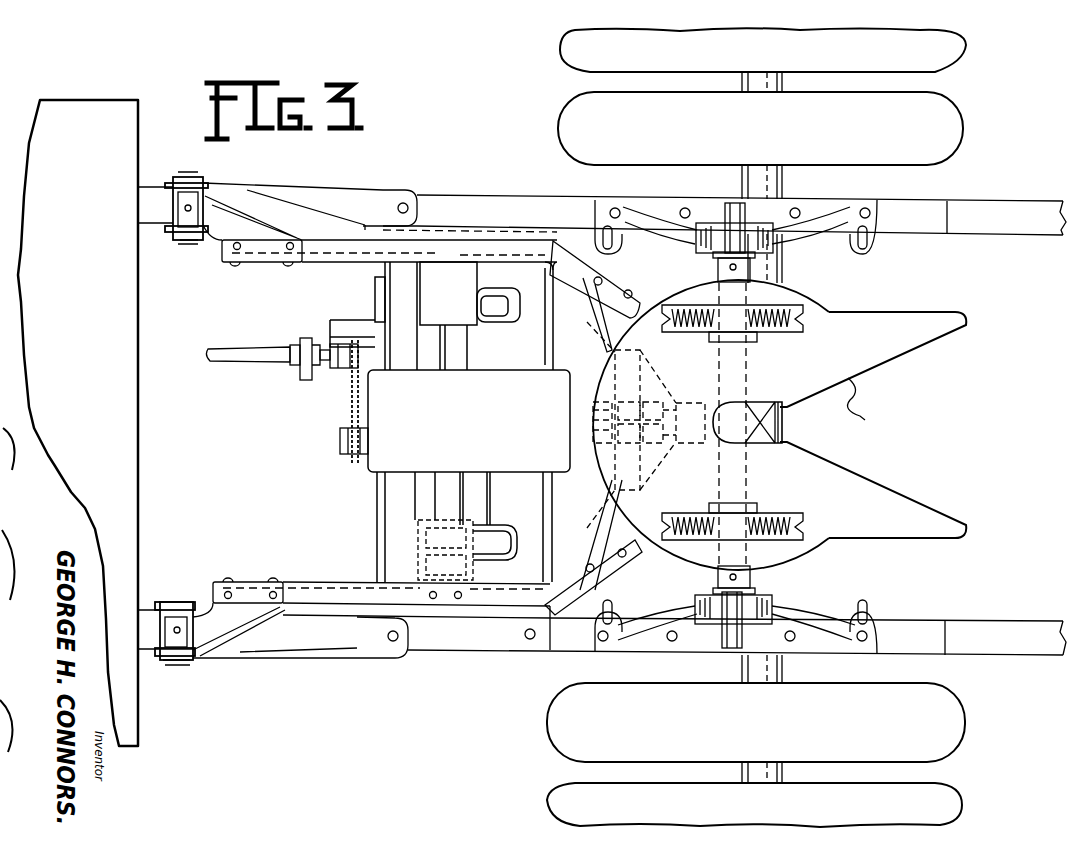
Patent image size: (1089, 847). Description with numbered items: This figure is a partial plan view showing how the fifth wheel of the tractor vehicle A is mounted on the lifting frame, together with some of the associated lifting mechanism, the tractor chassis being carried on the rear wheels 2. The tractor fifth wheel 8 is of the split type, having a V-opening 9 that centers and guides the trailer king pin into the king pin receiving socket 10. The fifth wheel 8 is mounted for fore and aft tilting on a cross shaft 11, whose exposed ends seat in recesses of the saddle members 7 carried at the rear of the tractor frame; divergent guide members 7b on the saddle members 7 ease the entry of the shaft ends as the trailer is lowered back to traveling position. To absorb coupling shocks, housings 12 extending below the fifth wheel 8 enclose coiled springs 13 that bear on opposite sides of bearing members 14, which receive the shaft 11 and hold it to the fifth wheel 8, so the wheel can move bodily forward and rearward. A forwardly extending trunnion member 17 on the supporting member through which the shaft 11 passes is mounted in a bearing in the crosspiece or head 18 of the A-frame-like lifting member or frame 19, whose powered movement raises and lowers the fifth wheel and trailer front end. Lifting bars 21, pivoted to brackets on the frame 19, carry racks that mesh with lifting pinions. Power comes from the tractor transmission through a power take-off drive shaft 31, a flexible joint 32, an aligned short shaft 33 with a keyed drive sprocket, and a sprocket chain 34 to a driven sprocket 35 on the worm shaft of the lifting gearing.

The rear wheels 2 is at (958, 50).
The tractor vehicle A is at (467, 196).
The saddle members 7 is at (830, 216).
The divergent guide members 7b is at (706, 245).
The tractor fifth wheel 8 is at (792, 552).
The V-opening 9 is at (845, 466).
The king pin receiving socket 10 is at (740, 405).
The cross shaft 11 is at (733, 205).
The housings 12 is at (800, 328).
The coiled springs 13 is at (770, 336).
The bearing members 14 is at (750, 302).
The trunnion member 17 is at (692, 405).
The crosspiece or head 18 is at (600, 522).
The lifting member or frame 19 is at (348, 257).
The lifting bars 21 is at (430, 538).
The power take-off drive shaft 31 is at (276, 362).
The flexible joint 32 is at (305, 382).
The short shaft 33 is at (328, 368).
The sprocket chain 34 is at (352, 410).
The driven sprocket 35 is at (347, 452).